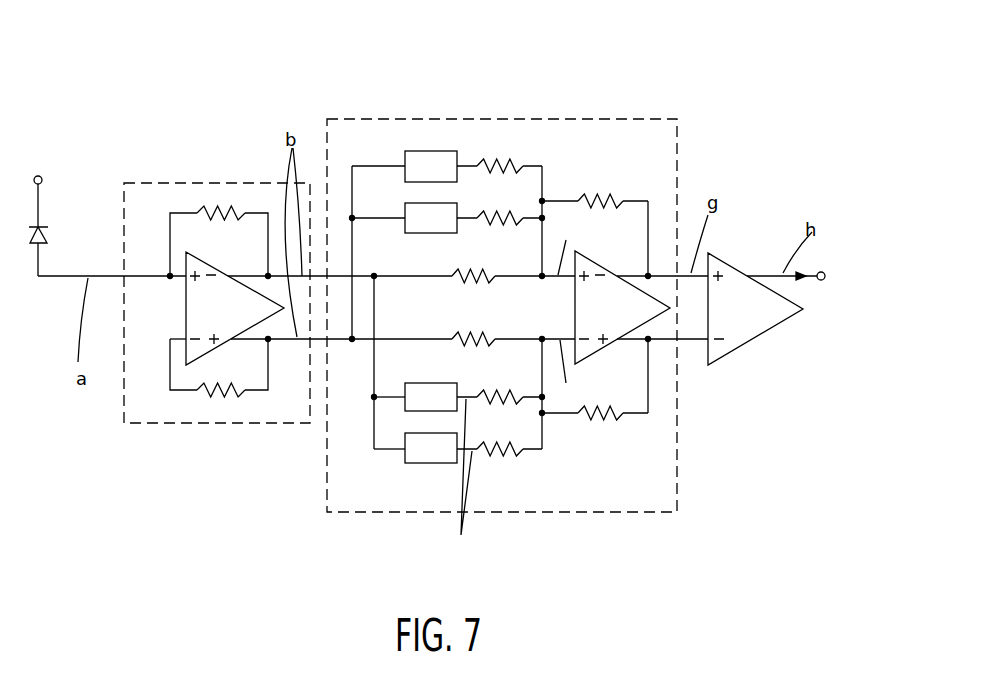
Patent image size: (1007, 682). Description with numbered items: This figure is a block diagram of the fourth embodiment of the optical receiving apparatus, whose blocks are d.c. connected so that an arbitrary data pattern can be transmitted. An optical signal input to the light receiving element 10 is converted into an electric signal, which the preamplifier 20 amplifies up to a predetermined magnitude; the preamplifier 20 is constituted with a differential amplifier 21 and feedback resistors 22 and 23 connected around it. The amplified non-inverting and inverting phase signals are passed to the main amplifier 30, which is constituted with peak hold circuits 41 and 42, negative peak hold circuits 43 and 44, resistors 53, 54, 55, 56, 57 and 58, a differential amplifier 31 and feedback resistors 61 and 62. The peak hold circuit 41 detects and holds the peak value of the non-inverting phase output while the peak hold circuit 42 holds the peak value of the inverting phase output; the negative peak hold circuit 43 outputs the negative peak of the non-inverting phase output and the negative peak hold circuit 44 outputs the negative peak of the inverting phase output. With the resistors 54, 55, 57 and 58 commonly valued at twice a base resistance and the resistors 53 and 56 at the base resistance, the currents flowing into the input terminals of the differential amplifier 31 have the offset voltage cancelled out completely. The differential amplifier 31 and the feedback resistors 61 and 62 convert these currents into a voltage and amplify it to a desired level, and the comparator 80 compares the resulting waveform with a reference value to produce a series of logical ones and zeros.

The light receiving element 10 is at (33, 243).
The preamplifier 20 is at (155, 183).
The differential amplifier 21 is at (186, 327).
The feedback resistor 22 is at (224, 211).
The feedback resistor 23 is at (220, 393).
The main amplifier 30 is at (677, 145).
The differential amplifier 31 is at (652, 322).
The peak hold circuit 41 is at (427, 151).
The peak hold circuit 42 is at (425, 465).
The negative peak hold circuit 43 is at (407, 215).
The negative peak hold circuit 44 is at (402, 403).
The resistor 53 is at (452, 271).
The resistor 54 is at (498, 166).
The resistor 55 is at (519, 218).
The resistor 56 is at (468, 337).
The resistor 57 is at (500, 453).
The resistor 58 is at (500, 403).
The feedback resistor 61 is at (618, 201).
The feedback resistor 62 is at (605, 418).
The comparator 80 is at (787, 323).